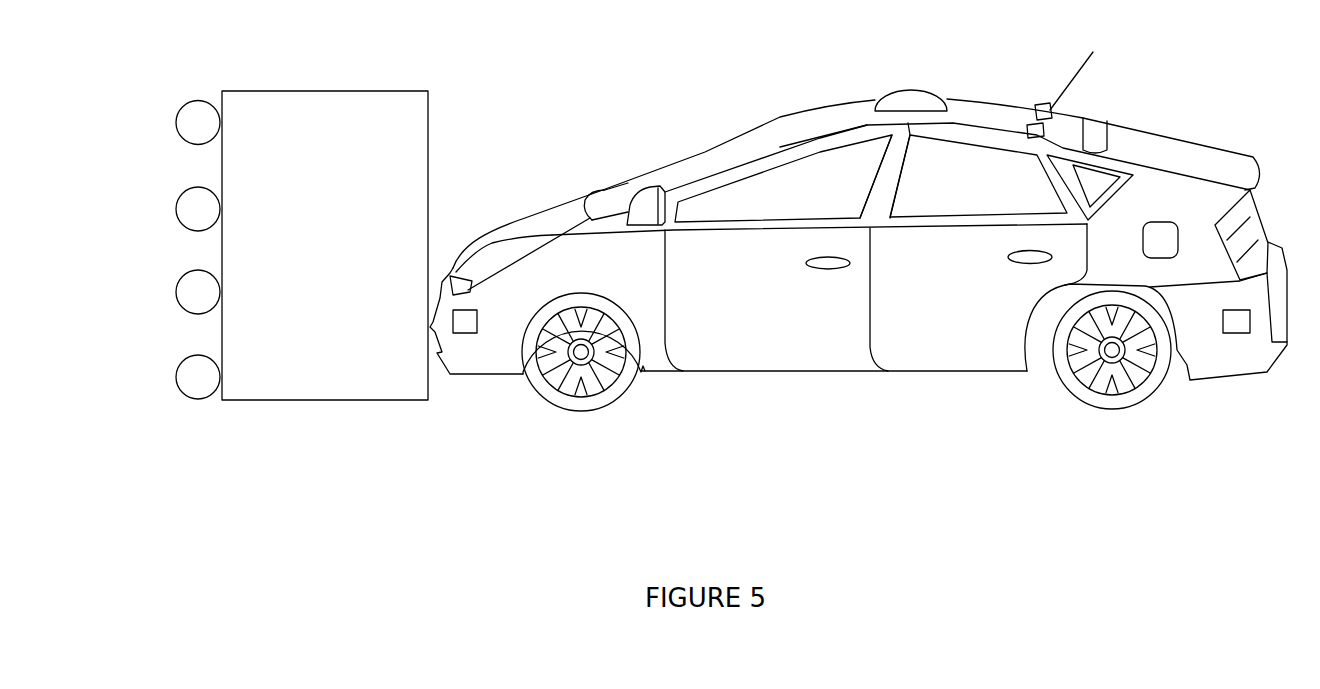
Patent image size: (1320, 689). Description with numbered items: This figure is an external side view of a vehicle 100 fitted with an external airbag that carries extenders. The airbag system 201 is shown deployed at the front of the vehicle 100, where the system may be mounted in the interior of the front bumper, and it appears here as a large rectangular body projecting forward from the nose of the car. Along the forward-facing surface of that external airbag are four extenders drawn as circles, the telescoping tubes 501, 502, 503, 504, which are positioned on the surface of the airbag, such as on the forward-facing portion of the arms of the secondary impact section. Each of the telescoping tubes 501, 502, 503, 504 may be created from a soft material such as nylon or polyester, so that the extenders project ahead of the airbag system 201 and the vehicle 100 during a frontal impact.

The vehicle 100 is at (778, 372).
The airbag system 201 is at (325, 400).
The telescoping tube 501 is at (177, 126).
The telescoping tube 502 is at (177, 218).
The telescoping tube 503 is at (177, 286).
The telescoping tube 504 is at (177, 389).